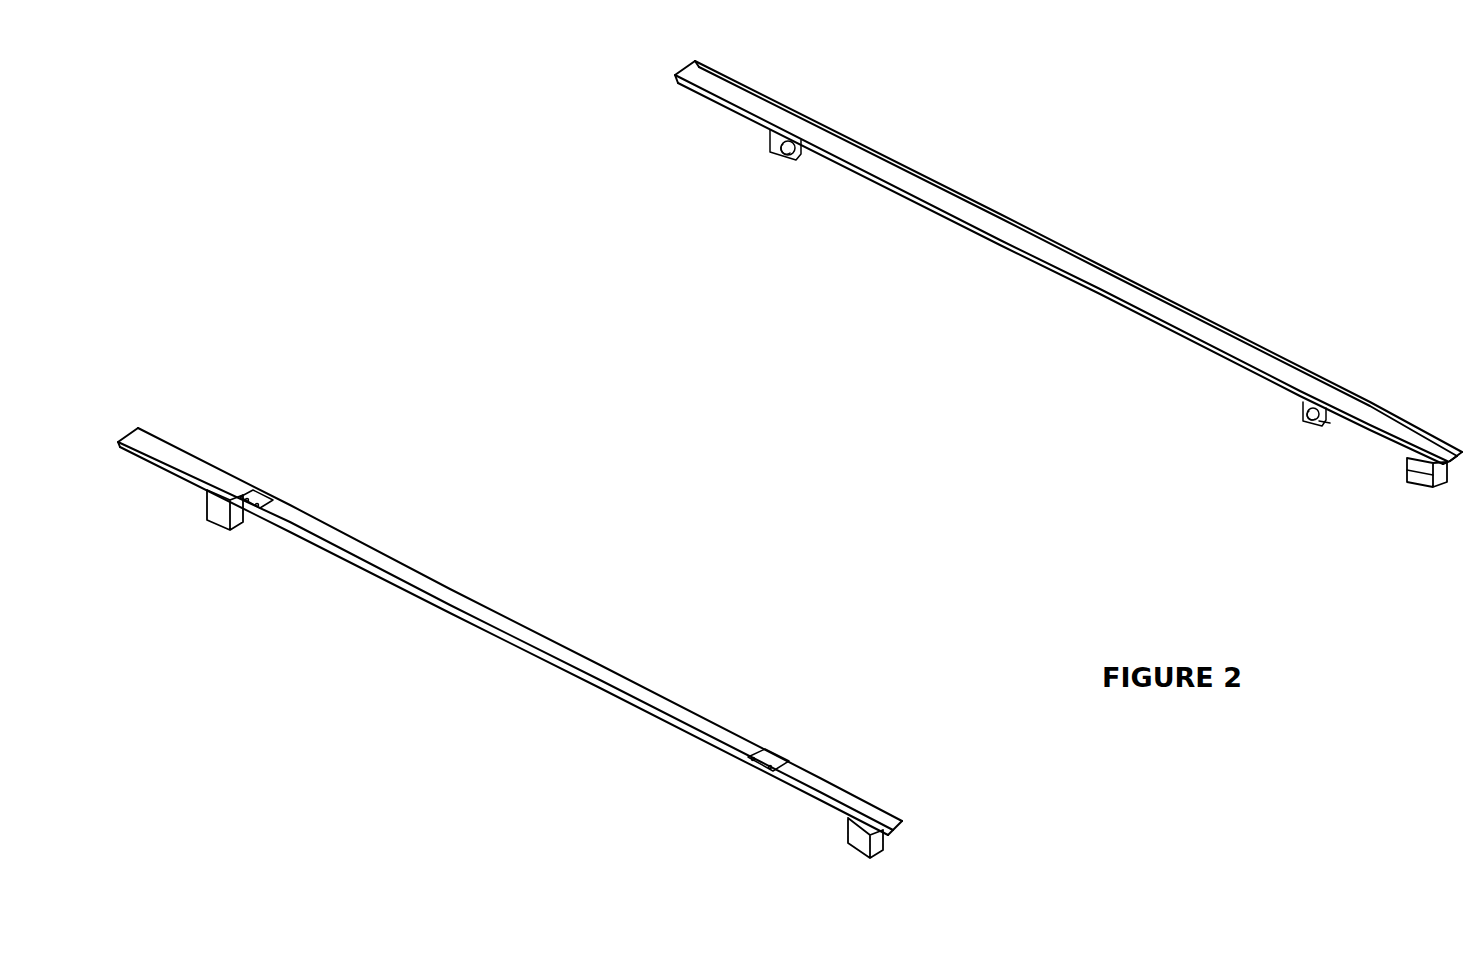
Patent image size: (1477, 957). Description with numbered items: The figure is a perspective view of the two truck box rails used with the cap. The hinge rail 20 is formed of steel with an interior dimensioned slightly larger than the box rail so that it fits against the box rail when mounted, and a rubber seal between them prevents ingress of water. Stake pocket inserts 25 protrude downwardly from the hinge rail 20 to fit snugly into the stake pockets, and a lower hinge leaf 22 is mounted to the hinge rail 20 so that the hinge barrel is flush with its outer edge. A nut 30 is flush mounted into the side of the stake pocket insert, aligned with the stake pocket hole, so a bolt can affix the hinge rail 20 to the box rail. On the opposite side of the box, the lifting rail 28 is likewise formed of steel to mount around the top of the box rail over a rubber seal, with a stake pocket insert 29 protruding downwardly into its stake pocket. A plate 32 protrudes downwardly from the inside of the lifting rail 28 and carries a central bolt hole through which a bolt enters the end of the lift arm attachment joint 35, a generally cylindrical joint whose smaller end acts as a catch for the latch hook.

The hinge rail 20 is at (837, 795).
The lower hinge leaf 22 is at (778, 758).
The stake pocket inserts 25 is at (860, 843).
The lifting rail 28 is at (1024, 242).
The stake pocket insert 29 is at (1445, 482).
The nut 30 is at (1420, 470).
The plate 32 is at (1330, 423).
The lift arm attachment joint 35 is at (1300, 417).